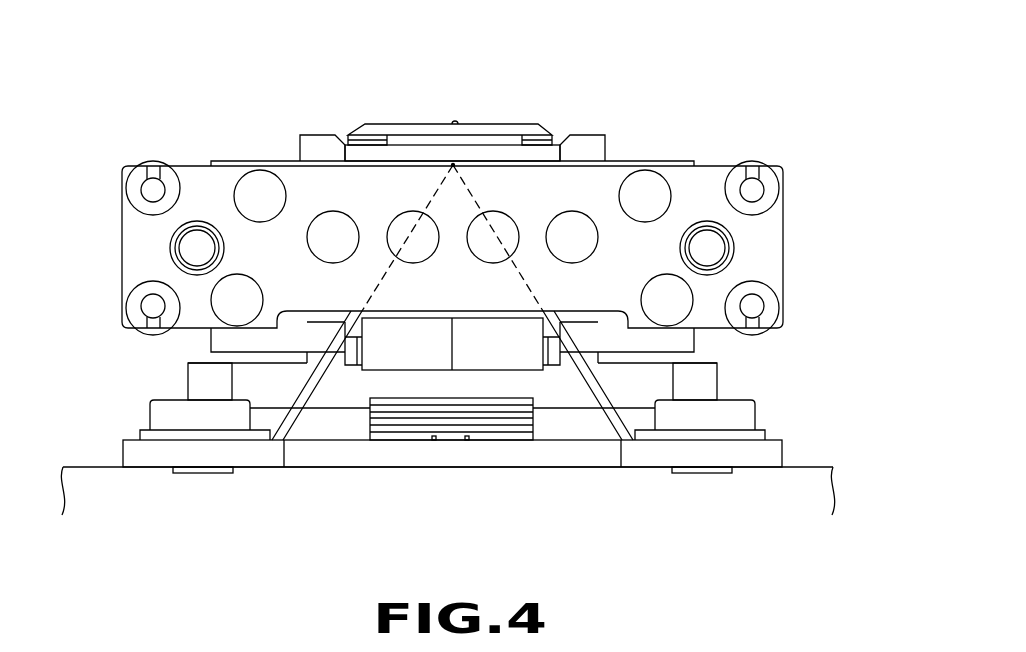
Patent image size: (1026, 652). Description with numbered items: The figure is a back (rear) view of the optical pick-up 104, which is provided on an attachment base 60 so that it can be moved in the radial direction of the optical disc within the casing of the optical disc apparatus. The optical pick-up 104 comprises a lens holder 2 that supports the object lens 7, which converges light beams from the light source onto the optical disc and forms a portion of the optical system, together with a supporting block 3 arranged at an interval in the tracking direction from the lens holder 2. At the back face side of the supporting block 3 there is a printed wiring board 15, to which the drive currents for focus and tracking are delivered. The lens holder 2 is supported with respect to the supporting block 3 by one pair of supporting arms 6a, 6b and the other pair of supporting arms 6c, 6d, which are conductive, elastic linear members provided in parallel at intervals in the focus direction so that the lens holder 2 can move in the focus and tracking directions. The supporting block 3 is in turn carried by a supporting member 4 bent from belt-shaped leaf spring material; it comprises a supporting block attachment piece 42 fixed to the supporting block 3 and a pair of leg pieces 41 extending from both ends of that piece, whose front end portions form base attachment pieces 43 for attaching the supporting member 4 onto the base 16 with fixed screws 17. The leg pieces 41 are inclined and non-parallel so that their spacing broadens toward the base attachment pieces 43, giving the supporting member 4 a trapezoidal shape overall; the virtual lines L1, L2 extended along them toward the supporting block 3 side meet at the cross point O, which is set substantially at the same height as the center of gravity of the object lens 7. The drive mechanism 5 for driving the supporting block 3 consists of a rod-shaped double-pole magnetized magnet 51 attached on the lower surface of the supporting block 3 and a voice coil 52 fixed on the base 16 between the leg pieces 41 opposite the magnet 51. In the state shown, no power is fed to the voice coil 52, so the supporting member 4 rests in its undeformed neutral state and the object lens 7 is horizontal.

The optical pick-up 104 is at (658, 113).
The supporting block 3 is at (184, 166).
The object lens 7 is at (507, 128).
The lens holder 2 is at (587, 136).
The cross point O is at (453, 165).
The virtual line L1 is at (433, 197).
The virtual line L2 is at (473, 197).
The supporting block attachment piece 42 is at (546, 224).
The supporting arm 6a is at (153, 189).
The supporting arm 6b is at (153, 307).
The supporting arm 6c is at (752, 188).
The supporting arm 6d is at (752, 308).
The printed wiring board 15 is at (137, 228).
The double-pole magnetized magnet 51 is at (443, 324).
The supporting member 4 is at (580, 374).
The leg piece 41 is at (303, 380).
The fixed screw 17 is at (165, 417).
The attachment base 60 is at (800, 463).
The base 16 is at (135, 457).
The base attachment piece 43 is at (158, 440).
The voice coil 52 is at (412, 432).
The drive mechanism 5 is at (480, 446).